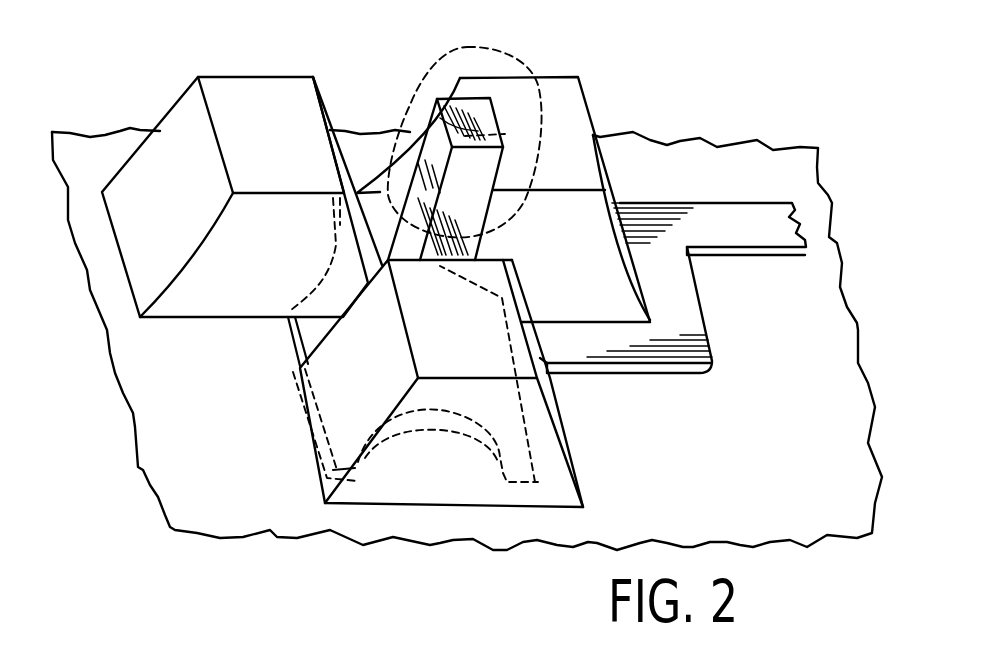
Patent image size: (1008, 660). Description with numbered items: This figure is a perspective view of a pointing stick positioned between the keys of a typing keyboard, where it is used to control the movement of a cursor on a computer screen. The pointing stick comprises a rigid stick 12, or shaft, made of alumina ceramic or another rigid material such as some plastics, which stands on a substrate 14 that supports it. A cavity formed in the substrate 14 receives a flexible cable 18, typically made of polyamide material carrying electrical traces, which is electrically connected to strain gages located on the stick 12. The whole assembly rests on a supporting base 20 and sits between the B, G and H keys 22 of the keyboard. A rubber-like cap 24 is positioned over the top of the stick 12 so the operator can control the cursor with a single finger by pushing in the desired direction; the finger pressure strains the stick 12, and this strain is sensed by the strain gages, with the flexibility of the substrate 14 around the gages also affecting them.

The stick 12 is at (488, 165).
The substrate 14 is at (315, 333).
The flexible cable 18 is at (678, 217).
The supporting base 20 is at (822, 336).
The keys 22 is at (193, 106).
The rubber-like cap 24 is at (420, 75).